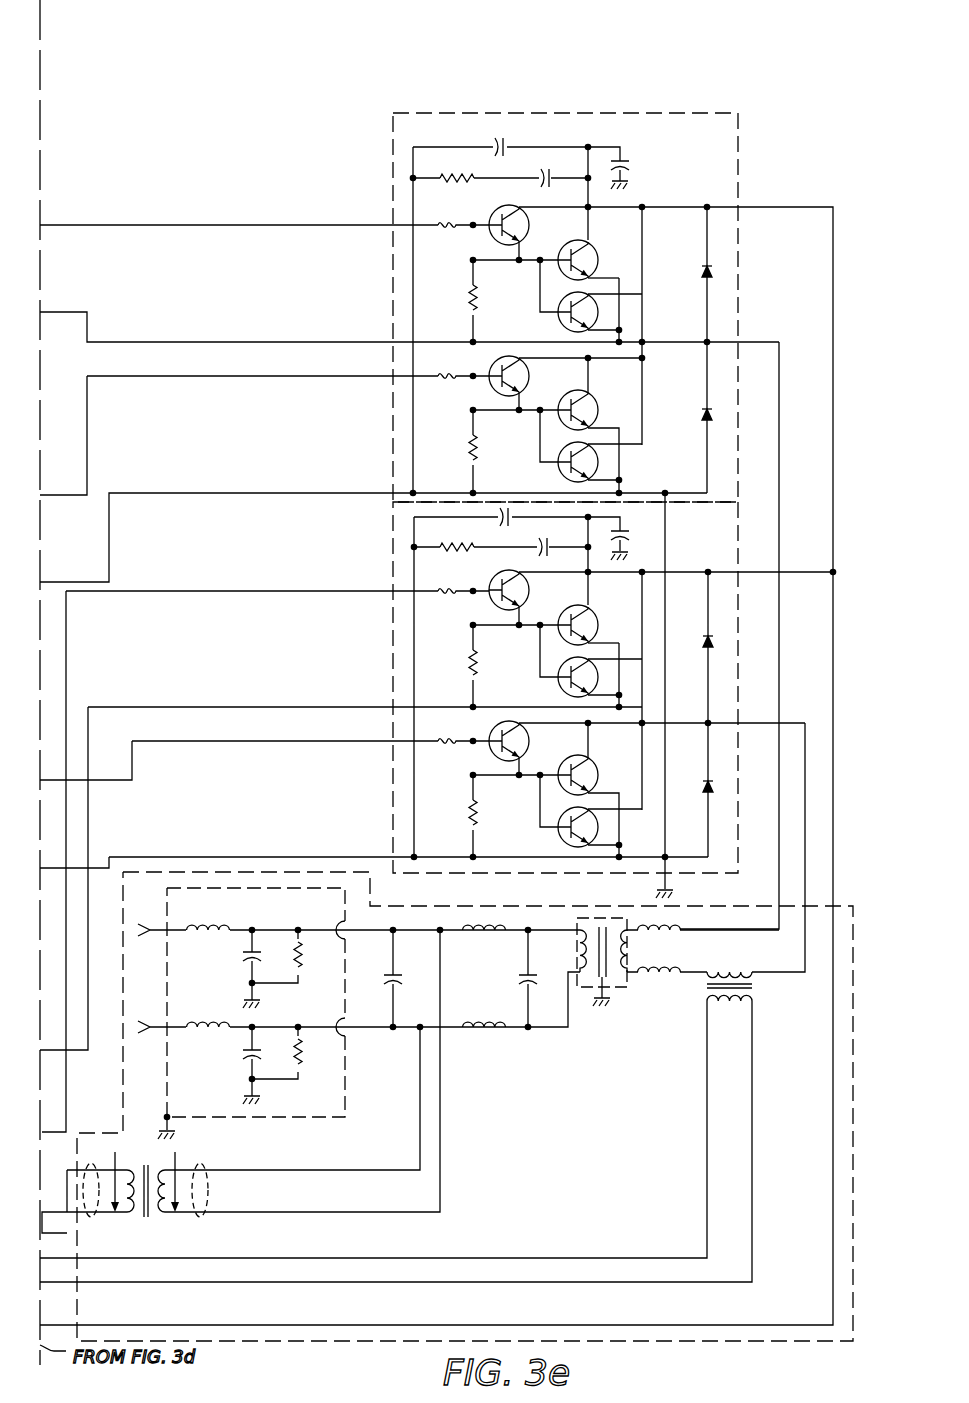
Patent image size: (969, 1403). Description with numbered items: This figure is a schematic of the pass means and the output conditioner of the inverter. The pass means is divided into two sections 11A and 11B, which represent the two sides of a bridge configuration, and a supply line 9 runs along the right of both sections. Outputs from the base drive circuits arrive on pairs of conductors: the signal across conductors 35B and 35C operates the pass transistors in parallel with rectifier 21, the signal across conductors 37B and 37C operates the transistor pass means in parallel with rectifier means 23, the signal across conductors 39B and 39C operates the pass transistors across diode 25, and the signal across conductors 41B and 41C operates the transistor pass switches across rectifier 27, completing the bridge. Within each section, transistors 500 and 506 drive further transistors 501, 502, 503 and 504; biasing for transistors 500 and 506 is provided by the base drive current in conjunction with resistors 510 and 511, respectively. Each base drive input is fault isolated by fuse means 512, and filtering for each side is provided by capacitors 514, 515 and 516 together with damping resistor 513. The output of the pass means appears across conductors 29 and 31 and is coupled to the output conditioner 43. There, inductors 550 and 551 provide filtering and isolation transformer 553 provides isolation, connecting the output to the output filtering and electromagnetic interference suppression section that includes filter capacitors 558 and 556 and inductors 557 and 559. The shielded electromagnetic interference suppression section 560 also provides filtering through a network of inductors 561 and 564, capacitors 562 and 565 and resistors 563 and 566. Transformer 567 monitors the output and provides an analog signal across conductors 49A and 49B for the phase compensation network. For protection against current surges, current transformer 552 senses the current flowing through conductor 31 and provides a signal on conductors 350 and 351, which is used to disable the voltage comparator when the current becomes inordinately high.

The supply line 9 is at (833, 505).
The pass means section 11A is at (738, 178).
The pass means section 11B is at (740, 516).
The rectifier 21 is at (702, 272).
The rectifier means 23 is at (702, 415).
The diode 25 is at (702, 787).
The rectifier 27 is at (702, 642).
The conductor 29 is at (779, 342).
The conductor 31 is at (805, 723).
The conductor 35B is at (68, 225).
The conductor 35C is at (68, 312).
The conductor 37B is at (58, 495).
The conductor 37C is at (58, 582).
The conductor 39B is at (205, 741).
The conductor 39C is at (190, 857).
The conductor 41B is at (183, 591).
The conductor 41C is at (183, 707).
The output conditioner 43 is at (853, 1060).
The conductor 49A is at (100, 1216).
The conductor 49B is at (67, 1170).
The conductor 350 is at (170, 1258).
The conductor 351 is at (172, 1282).
The transistor 500 is at (530, 229).
The transistor 501 is at (602, 236).
The transistor 502 is at (560, 325).
The transistor 503 is at (594, 396).
The transistor 504 is at (560, 476).
The transistor 506 is at (530, 380).
The resistor 510 is at (476, 450).
The resistor 511 is at (476, 296).
The fuse means 512 is at (447, 220).
The damping resistor 513 is at (459, 571).
The capacitor 514 is at (508, 143).
The capacitor 515 is at (562, 160).
The capacitor 516 is at (628, 170).
The inductor 550 is at (659, 934).
The inductor 551 is at (659, 976).
The current transformer 552 is at (757, 987).
The isolation transformer 553 is at (627, 987).
The filter capacitor 556 is at (518, 979).
The inductor 557 is at (484, 934).
The filter capacitor 558 is at (393, 975).
The inductor 559 is at (484, 1031).
The electromagnetic interference suppression section 560 is at (345, 1072).
The inductor 561 is at (208, 926).
The capacitor 562 is at (244, 958).
The resistor 563 is at (296, 950).
The inductor 564 is at (208, 1023).
The capacitor 565 is at (244, 1058).
The resistor 566 is at (296, 1047).
The transformer 567 is at (146, 1163).